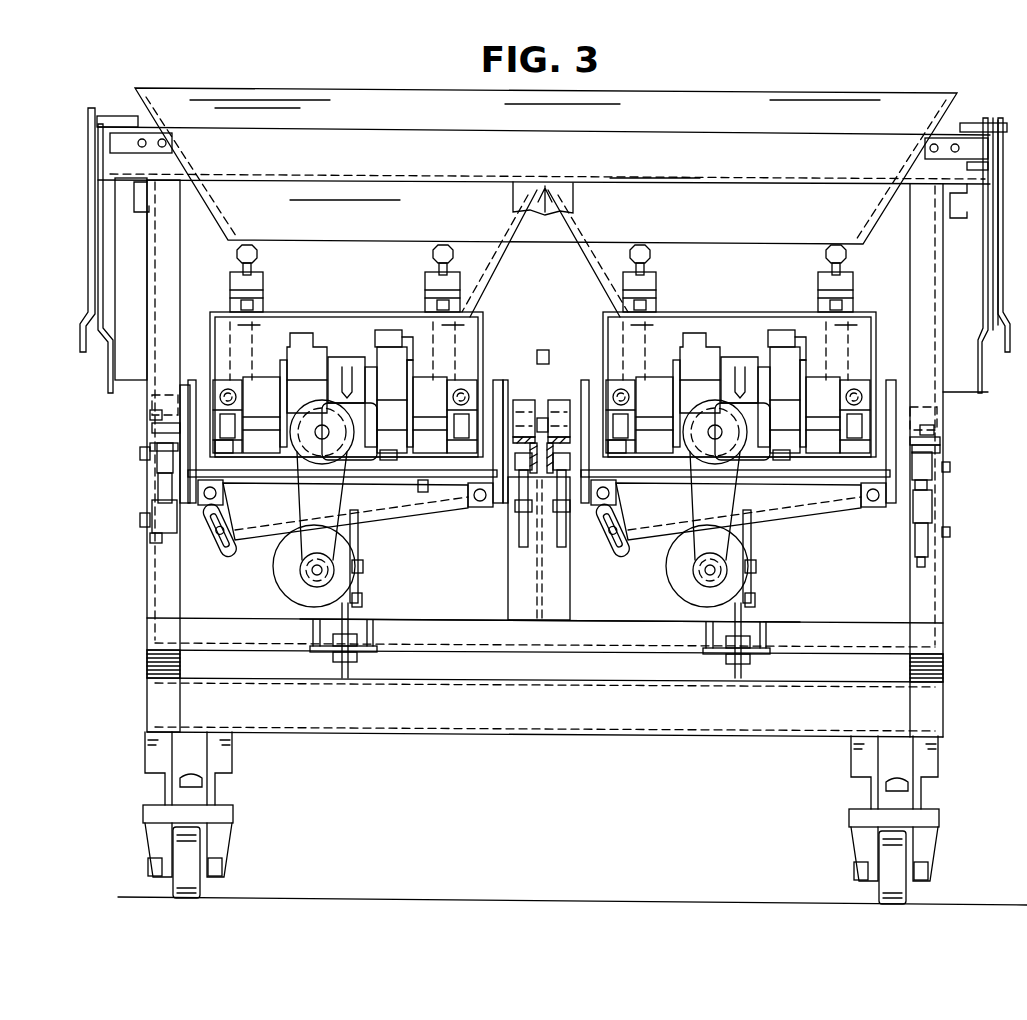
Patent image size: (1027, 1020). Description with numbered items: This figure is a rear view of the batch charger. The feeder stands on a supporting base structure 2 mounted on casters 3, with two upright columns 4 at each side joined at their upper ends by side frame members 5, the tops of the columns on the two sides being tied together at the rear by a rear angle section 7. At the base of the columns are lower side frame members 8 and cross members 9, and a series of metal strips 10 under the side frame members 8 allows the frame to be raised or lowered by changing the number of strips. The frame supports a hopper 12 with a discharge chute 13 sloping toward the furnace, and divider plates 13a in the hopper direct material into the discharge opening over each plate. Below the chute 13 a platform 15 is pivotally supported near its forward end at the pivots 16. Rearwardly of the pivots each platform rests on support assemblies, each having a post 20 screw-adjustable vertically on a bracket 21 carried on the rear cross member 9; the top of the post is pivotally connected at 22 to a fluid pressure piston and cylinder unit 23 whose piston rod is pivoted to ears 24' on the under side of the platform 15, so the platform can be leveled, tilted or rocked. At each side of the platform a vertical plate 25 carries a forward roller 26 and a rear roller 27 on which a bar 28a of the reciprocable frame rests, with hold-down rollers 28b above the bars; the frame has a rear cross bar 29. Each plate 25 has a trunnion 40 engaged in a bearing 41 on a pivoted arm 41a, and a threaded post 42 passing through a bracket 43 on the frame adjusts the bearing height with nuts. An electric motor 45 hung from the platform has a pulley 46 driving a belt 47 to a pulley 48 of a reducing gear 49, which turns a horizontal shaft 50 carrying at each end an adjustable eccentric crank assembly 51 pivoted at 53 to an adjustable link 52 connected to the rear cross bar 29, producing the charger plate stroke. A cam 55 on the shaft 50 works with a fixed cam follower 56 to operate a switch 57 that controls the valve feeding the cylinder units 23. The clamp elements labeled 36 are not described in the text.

The supporting base structure 2 is at (508, 735).
The casters 3 is at (200, 895).
The upright columns 4 is at (152, 565).
The side frame members 5 is at (140, 215).
The rear angle section 7 is at (430, 140).
The lower side frame members 8 is at (147, 640).
The cross members 9 is at (601, 622).
The metal strips 10 is at (147, 672).
The hopper 12 is at (345, 105).
The discharge chute 13 is at (485, 338).
The divider plates 13a is at (500, 288).
The platform 15 is at (450, 515).
The pivots 16 is at (184, 395).
The post 20 is at (350, 605).
The bracket 21 is at (360, 651).
The pivotal connection 22 is at (364, 585).
The fluid pressure piston and cylinder unit 23 is at (358, 545).
The ears 24' is at (542, 512).
The vertical plate 25 is at (192, 380).
The forward roller 26 is at (228, 454).
The rear roller 27 is at (150, 447).
The bar 28a is at (463, 388).
The hold-down rollers 28b is at (541, 347).
The rear cross bar 29 is at (428, 458).
The clamp bolt 36 is at (264, 300).
The trunnion 40 is at (524, 400).
The bearing 41 is at (542, 418).
The pivoted arm 41a is at (140, 452).
The threaded post 42 is at (508, 550).
The bracket 43 is at (515, 525).
The electric motor 45 is at (285, 567).
The pulley 46 is at (305, 580).
The belt 47 is at (296, 503).
The pulley 48 is at (305, 456).
The reducing gear 49 is at (346, 356).
The horizontal shaft 50 is at (393, 397).
The adjustable eccentric crank assembly 51 is at (285, 372).
The adjustable link 52 is at (255, 454).
The pivotal connection 53 is at (222, 392).
The cam 55 is at (390, 460).
The fixed cam follower 56 is at (404, 340).
The switch 57 is at (380, 330).